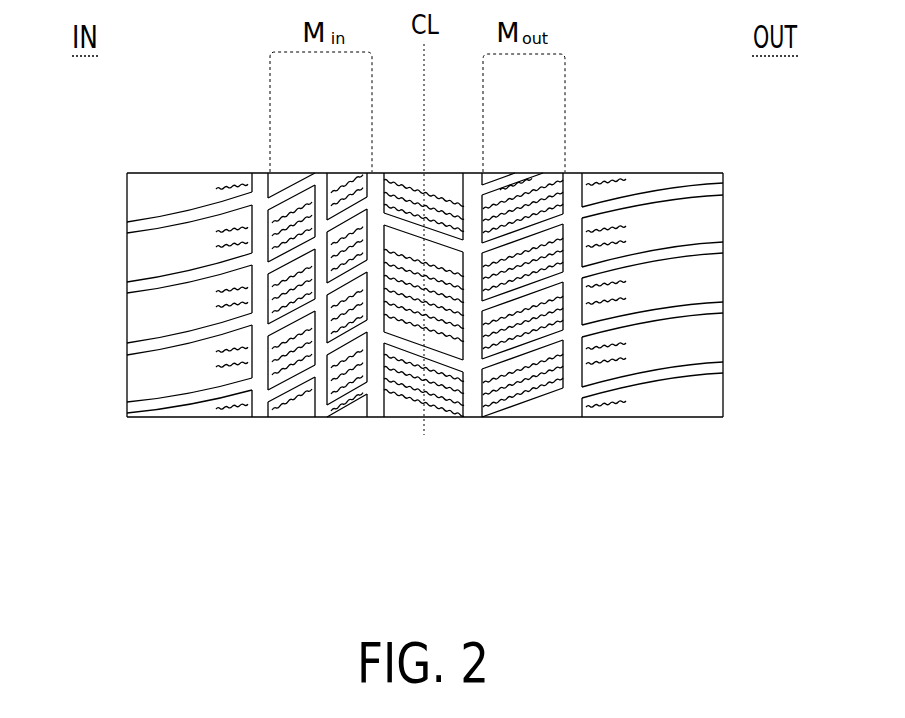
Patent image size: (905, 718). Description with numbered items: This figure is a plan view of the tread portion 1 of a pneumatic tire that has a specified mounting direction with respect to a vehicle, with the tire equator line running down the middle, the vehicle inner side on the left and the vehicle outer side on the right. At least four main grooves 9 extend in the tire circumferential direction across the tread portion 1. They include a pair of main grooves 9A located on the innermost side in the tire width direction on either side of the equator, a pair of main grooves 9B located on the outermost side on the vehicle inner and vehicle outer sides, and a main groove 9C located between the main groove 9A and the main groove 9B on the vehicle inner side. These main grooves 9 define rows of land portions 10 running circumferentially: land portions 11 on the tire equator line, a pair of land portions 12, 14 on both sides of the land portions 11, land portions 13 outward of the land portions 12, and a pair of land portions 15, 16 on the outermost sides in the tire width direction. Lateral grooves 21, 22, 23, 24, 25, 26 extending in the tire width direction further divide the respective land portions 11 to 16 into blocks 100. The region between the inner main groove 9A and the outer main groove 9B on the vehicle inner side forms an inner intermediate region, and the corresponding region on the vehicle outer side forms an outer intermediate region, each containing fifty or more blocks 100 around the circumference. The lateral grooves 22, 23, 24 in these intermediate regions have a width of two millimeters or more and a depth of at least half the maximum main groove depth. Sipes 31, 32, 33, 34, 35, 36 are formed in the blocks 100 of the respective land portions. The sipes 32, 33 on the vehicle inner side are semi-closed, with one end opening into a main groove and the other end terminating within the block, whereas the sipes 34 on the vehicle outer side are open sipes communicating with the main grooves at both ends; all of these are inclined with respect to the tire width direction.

The tread portion 1 is at (690, 164).
The main grooves 9 is at (422, 369).
The innermost main grooves 9A is at (380, 419).
The outermost main grooves 9B is at (267, 419).
The middle main groove 9C is at (327, 419).
The land portions 10 is at (422, 292).
The center land portion 11 is at (446, 188).
The land portion 12 is at (337, 185).
The land portion 13 is at (288, 190).
The land portion 14 is at (526, 185).
The shoulder land portion 15 is at (170, 190).
The shoulder land portion 16 is at (657, 182).
The lateral grooves 21 is at (447, 372).
The lateral grooves 22 is at (350, 207).
The lateral grooves 23 is at (290, 262).
The lateral grooves 24 is at (552, 217).
The lateral grooves 25 is at (137, 348).
The lateral grooves 26 is at (712, 369).
The sipes 31 is at (406, 400).
The sipes 32 is at (356, 396).
The sipes 33 is at (287, 392).
The sipes 34 is at (530, 392).
The sipes 35 is at (236, 358).
The sipes 36 is at (617, 347).
The blocks 100 is at (277, 292).